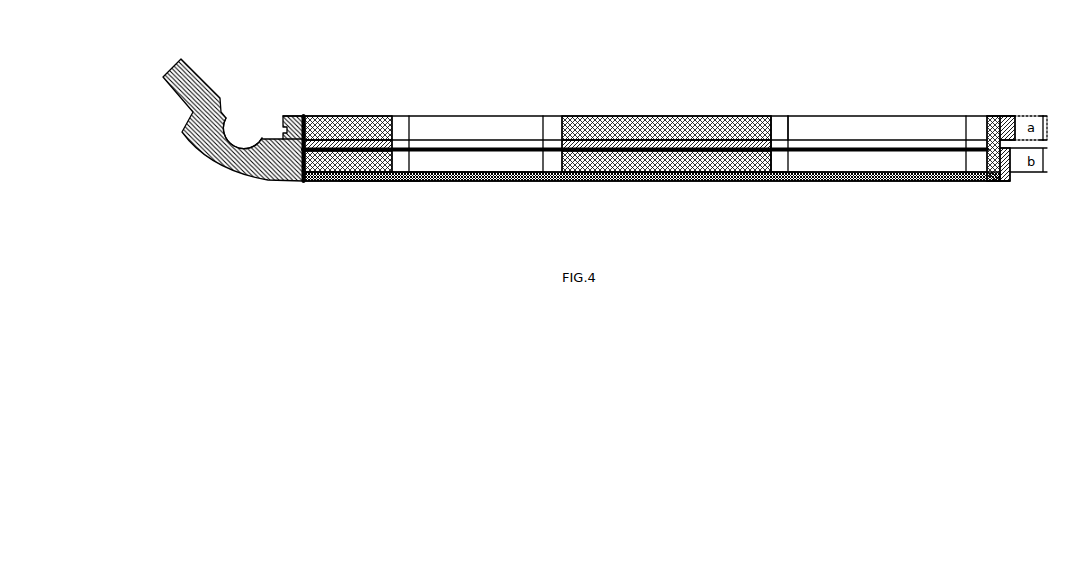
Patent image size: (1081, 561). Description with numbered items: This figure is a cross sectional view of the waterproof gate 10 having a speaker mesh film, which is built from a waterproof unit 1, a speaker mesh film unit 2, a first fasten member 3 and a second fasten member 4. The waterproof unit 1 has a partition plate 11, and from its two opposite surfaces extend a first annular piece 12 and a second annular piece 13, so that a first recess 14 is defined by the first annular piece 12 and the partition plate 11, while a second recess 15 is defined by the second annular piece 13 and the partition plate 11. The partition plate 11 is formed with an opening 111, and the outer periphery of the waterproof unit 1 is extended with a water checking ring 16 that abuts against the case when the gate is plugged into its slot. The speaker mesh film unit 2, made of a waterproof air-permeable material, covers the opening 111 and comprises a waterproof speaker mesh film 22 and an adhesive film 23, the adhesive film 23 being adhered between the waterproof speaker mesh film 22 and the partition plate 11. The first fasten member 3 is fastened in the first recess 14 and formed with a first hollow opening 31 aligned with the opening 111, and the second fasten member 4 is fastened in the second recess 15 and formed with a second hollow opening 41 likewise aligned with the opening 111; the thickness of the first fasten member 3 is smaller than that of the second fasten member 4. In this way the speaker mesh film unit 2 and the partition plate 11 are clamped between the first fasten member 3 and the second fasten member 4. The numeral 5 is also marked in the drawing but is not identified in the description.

The waterproof unit 1 is at (254, 181).
The speaker mesh film unit 2 is at (677, 185).
The first fasten member 3 is at (672, 115).
The second fasten member 4 is at (670, 182).
The cover plate 5 is at (713, 182).
The waterproof gate 10 is at (609, 51).
The partition plate 11 is at (645, 115).
The first annular piece 12 is at (298, 115).
The second annular piece 13 is at (300, 183).
The first recess 14 is at (327, 112).
The second recess 15 is at (306, 165).
The water checking ring 16 is at (282, 123).
The waterproof speaker mesh film 22 is at (471, 153).
The adhesive film 23 is at (380, 179).
The first hollow opening 31 is at (790, 115).
The second hollow opening 41 is at (787, 182).
The opening 111 is at (805, 115).